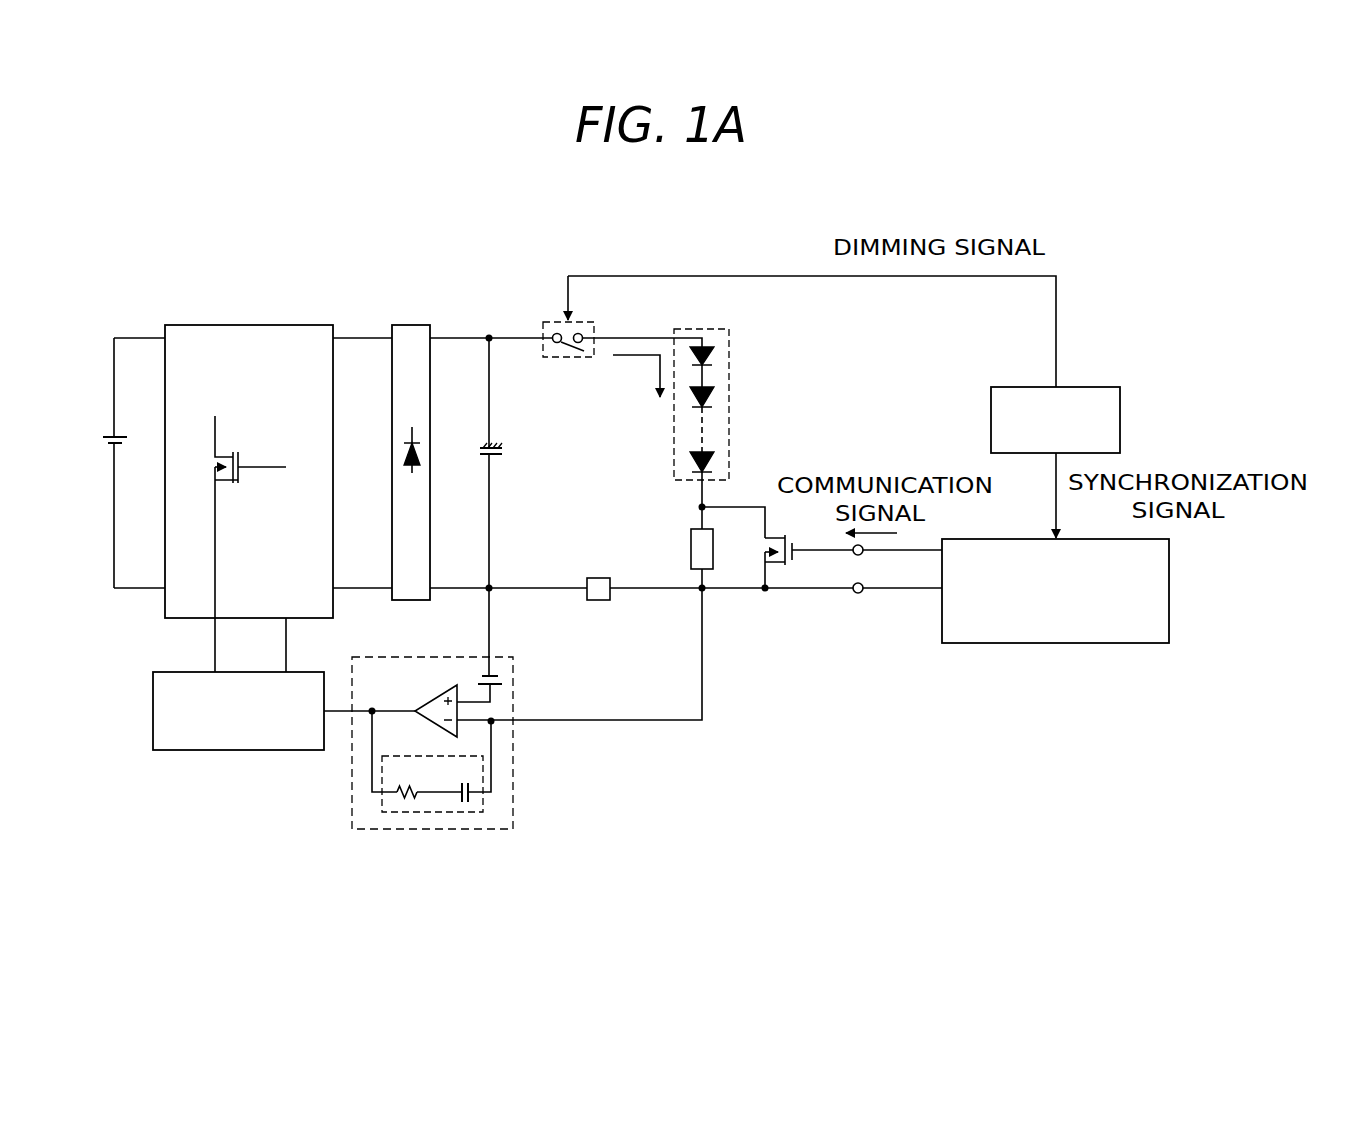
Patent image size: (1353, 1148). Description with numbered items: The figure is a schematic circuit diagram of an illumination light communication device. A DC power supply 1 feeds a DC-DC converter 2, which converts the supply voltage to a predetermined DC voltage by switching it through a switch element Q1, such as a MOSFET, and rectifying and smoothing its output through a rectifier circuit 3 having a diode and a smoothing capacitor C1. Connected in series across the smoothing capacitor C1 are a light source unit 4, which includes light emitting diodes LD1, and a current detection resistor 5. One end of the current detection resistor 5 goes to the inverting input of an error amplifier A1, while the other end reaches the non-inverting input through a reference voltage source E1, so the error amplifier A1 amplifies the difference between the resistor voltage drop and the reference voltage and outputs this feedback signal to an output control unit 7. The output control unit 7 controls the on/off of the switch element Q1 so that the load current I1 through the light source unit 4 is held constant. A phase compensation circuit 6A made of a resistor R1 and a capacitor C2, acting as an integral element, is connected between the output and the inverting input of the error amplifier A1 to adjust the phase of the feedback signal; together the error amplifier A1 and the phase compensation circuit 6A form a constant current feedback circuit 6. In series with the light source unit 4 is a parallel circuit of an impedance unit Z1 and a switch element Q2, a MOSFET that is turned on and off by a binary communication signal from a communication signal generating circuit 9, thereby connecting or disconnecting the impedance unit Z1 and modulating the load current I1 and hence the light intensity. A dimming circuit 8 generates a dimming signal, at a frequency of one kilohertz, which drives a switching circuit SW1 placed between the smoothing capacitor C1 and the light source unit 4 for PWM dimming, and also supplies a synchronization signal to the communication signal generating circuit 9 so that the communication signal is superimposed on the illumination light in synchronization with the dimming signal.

The DC power supply 1 is at (107, 443).
The DC-DC converter 2 is at (333, 392).
The rectifier circuit 3 is at (430, 388).
The light source unit 4 is at (730, 330).
The current detection resistor 5 is at (603, 600).
The constant current feedback circuit 6 is at (513, 768).
The phase compensation circuit 6A is at (402, 812).
The output control unit 7 is at (153, 690).
The dimming circuit 8 is at (1105, 385).
The communication signal generating circuit 9 is at (1017, 643).
The switch element Q1 is at (250, 517).
The switch element Q2 is at (782, 573).
The switching circuit SW1 is at (573, 357).
The smoothing capacitor C1 is at (505, 437).
The light emitting diodes LD1 is at (710, 353).
The load current I1 is at (637, 387).
The impedance unit Z1 is at (690, 535).
The error amplifier A1 is at (429, 705).
The reference voltage source E1 is at (500, 682).
The resistor R1 is at (407, 777).
The capacitor C2 is at (460, 779).